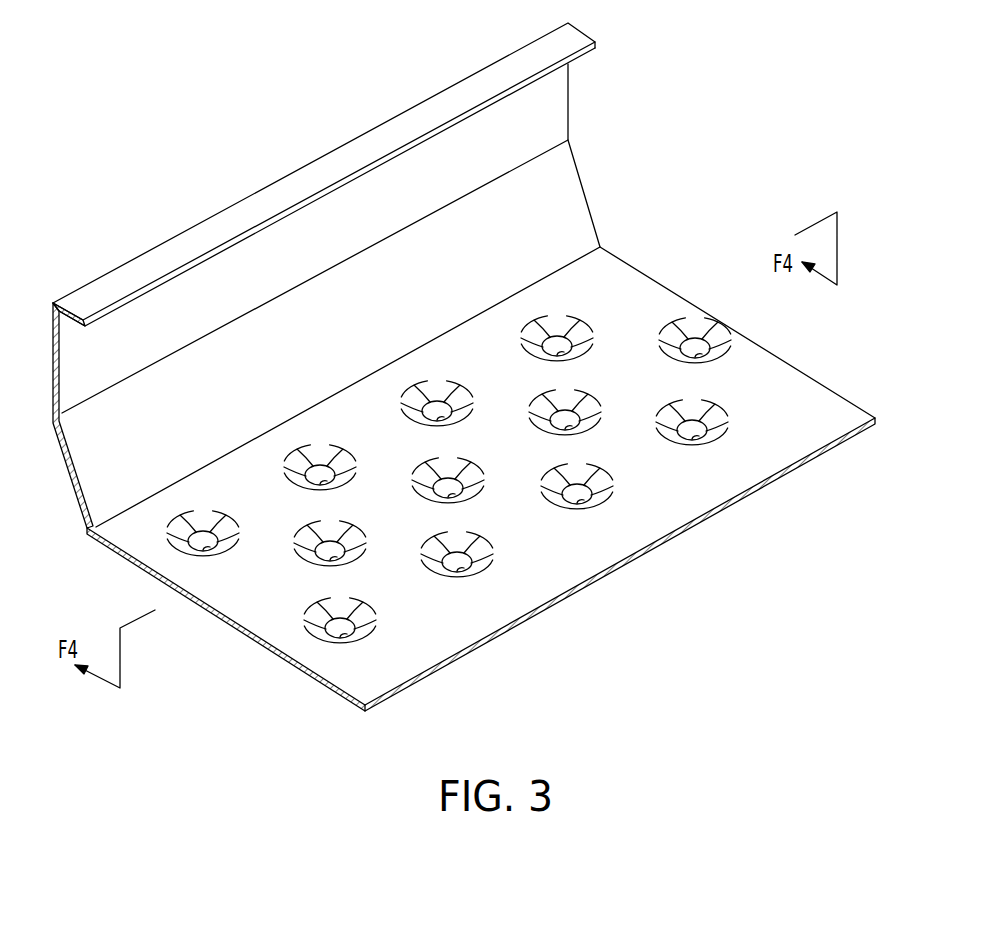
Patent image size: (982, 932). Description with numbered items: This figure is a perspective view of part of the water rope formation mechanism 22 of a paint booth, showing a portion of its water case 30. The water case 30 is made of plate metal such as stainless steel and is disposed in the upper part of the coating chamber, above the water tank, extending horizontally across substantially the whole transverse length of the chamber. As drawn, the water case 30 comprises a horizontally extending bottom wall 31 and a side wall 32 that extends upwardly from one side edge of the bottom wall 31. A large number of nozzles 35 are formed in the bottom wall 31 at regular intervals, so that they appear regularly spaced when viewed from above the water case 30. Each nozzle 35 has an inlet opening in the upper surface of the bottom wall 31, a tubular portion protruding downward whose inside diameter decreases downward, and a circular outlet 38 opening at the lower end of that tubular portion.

The water rope formation mechanism 22 is at (738, 168).
The water case 30 is at (790, 360).
The bottom wall 31 is at (558, 563).
The side wall 32 is at (560, 156).
The nozzle 35 is at (522, 331).
The outlet 38 is at (565, 352).